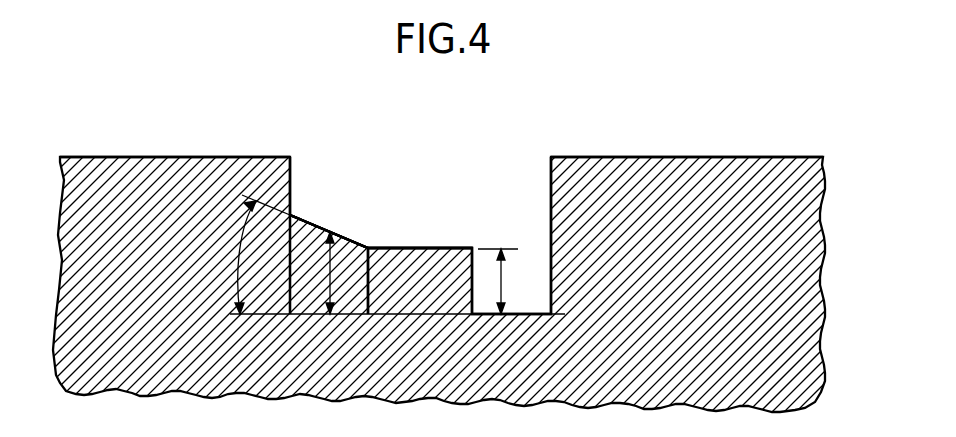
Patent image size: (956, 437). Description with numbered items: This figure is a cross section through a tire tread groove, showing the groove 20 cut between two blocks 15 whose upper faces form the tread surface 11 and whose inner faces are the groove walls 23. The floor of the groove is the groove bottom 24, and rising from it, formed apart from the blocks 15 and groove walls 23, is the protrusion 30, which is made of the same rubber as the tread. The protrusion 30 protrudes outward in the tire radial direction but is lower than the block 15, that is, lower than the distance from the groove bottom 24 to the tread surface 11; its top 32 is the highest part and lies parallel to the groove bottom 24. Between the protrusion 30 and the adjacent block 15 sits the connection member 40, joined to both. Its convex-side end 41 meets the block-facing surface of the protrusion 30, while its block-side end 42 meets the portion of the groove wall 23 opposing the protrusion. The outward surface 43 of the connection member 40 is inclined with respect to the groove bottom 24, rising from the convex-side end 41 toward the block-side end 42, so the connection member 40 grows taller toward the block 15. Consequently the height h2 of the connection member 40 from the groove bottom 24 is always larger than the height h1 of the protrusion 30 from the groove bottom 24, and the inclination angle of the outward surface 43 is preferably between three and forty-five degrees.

The tread surface 11 is at (175, 157).
The block 15 is at (130, 175).
The groove 20 is at (551, 226).
The groove wall 23 is at (290, 185).
The groove bottom 24 is at (484, 312).
The protrusion 30 is at (432, 305).
The top 32 is at (447, 248).
The connection member 40 is at (298, 307).
The convex-side end 41 is at (368, 247).
The block-side end 42 is at (294, 216).
The outward surface 43 is at (340, 235).
The height of the convex portion h1 is at (500, 283).
The height of the connection member h2 is at (340, 283).